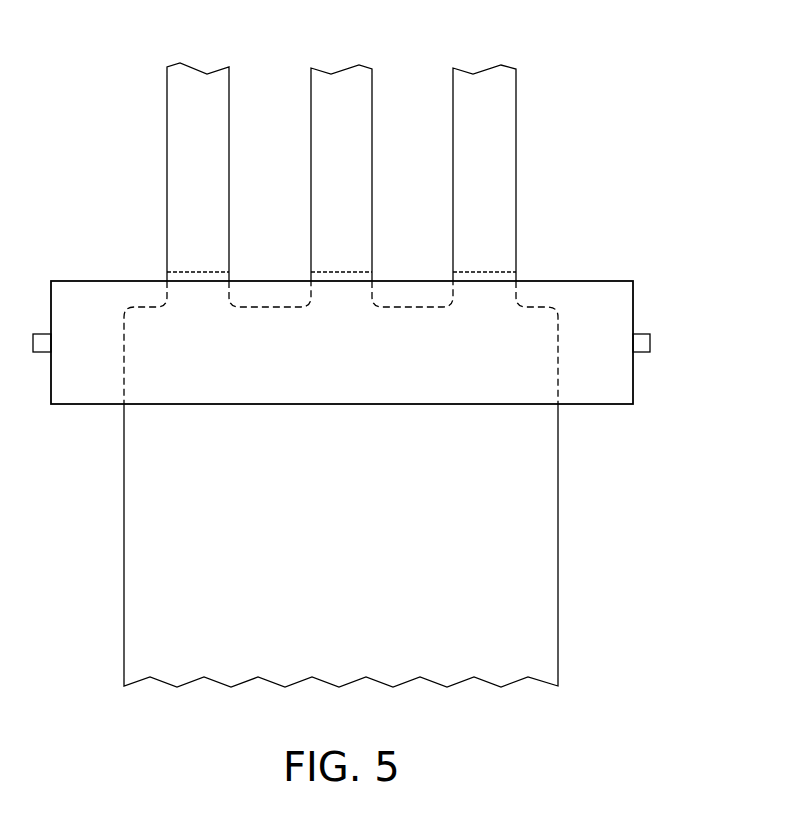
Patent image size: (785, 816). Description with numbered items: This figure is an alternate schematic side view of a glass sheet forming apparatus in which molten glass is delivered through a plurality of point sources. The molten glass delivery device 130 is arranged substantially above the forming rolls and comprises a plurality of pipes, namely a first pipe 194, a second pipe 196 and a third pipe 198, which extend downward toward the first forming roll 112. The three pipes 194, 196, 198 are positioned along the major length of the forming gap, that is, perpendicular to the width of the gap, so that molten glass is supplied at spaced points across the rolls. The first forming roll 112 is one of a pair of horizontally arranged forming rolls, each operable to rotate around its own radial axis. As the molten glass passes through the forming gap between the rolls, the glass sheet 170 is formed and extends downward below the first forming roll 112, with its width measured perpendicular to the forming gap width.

The first forming roll 112 is at (73, 281).
The molten glass delivery device 130 is at (600, 138).
The glass sheet 170 is at (559, 596).
The first pipe 194 is at (167, 165).
The second pipe 196 is at (311, 163).
The third pipe 198 is at (453, 163).